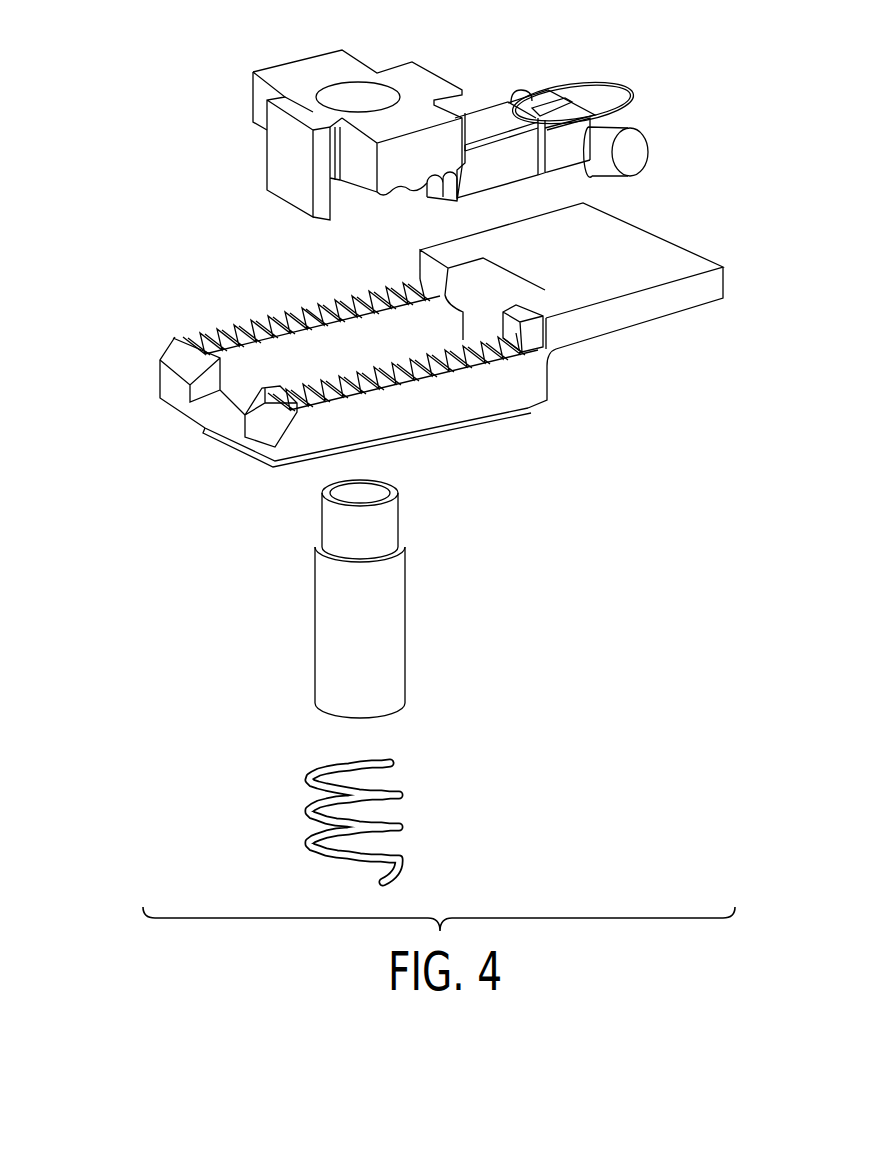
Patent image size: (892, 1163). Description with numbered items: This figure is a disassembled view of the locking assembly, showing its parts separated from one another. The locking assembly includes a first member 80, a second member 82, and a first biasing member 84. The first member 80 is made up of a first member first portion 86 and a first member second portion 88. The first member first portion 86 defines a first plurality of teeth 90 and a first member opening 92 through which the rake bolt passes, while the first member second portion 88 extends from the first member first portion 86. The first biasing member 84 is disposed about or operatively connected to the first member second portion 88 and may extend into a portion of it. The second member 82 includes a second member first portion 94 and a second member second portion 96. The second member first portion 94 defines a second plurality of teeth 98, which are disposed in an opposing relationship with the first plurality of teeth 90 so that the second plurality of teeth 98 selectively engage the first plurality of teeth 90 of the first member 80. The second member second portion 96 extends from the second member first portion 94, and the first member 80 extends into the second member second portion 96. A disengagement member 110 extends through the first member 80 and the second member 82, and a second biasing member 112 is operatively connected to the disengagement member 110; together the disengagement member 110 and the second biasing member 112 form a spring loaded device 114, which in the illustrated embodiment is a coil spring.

The first member 80 is at (201, 148).
The second member 82 is at (118, 396).
The first biasing member 84 is at (633, 90).
The first member first portion 86 is at (299, 72).
The first member second portion 88 is at (477, 122).
The first plurality of teeth 90 is at (401, 190).
The first member opening 92 is at (370, 92).
The second member first portion 94 is at (478, 410).
The second member second portion 96 is at (653, 245).
The second plurality of teeth 98 is at (247, 328).
The disengagement member 110 is at (393, 593).
The second biasing member 112 is at (403, 788).
The spring loaded device 114 is at (197, 732).